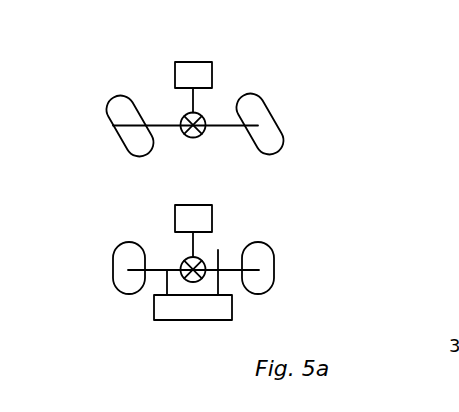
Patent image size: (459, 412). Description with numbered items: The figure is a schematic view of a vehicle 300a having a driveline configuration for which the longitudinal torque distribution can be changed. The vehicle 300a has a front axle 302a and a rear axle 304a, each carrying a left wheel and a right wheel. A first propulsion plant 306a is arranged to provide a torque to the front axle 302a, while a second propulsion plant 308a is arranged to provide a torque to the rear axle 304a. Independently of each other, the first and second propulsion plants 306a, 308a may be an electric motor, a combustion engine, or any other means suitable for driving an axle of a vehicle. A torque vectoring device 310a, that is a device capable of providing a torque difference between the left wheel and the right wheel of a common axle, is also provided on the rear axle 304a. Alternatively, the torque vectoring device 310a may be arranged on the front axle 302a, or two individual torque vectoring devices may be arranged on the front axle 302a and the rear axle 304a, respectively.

The vehicle 300a is at (288, 61).
The front axle 302a is at (228, 128).
The rear axle 304a is at (218, 250).
The first propulsion plant 306a is at (196, 62).
The second propulsion plant 308a is at (175, 213).
The torque vectoring device 310a is at (180, 320).